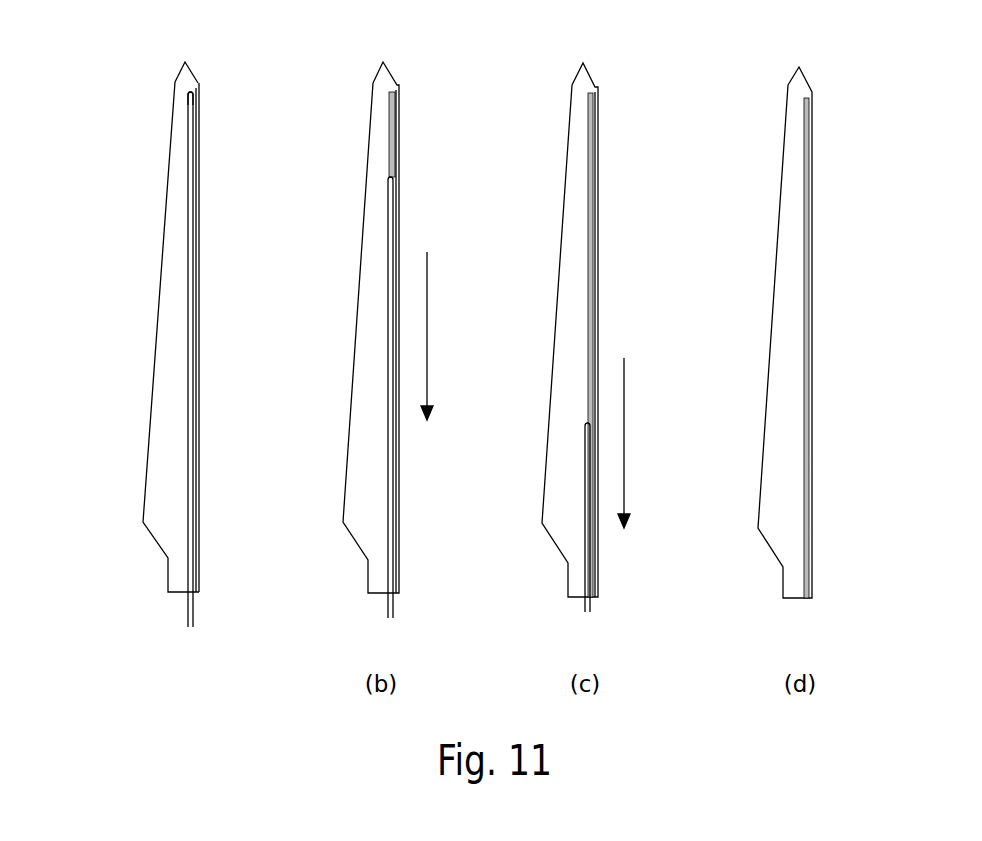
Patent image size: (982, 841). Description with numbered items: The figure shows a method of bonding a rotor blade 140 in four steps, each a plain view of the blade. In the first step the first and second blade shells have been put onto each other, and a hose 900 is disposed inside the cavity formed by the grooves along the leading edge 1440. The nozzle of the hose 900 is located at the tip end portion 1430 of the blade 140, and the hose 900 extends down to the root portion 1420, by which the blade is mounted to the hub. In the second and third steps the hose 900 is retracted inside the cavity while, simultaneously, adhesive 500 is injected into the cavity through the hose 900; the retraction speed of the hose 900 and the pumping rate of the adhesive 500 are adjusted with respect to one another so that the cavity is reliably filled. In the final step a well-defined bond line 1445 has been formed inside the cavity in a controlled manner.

The rotor blade 140 is at (113, 45).
The tip end portion 1430 is at (174, 89).
The root portion 1420 is at (167, 580).
The leading edge 1440 is at (200, 317).
The hose 900 is at (187, 393).
The adhesive 500 is at (397, 102).
The bond line 1445 is at (812, 322).